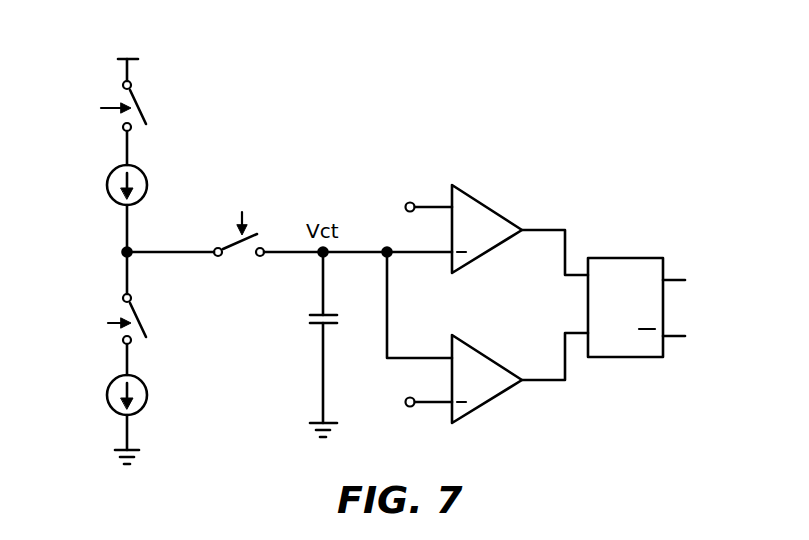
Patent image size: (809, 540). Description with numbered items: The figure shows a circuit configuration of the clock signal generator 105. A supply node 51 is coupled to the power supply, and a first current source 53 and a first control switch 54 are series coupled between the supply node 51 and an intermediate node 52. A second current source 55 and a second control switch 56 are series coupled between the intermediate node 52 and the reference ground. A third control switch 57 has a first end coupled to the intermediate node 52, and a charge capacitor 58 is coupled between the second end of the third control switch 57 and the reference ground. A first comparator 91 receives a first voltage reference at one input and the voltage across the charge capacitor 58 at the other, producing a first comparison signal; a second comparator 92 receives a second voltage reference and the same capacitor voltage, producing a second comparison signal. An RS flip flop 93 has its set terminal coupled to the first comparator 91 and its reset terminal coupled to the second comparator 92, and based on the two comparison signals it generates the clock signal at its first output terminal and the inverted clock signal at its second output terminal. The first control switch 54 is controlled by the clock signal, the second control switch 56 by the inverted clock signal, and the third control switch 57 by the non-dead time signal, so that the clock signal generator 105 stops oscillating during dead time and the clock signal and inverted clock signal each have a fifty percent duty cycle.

The clock signal generator 105 is at (688, 72).
The supply node 51 is at (111, 57).
The intermediate node 52 is at (115, 255).
The first current source 53 is at (152, 192).
The first control switch 54 is at (148, 111).
The second current source 55 is at (150, 395).
The second control switch 56 is at (146, 320).
The third control switch 57 is at (238, 262).
The charge capacitor 58 is at (312, 338).
The first comparator 91 is at (475, 230).
The second comparator 92 is at (478, 382).
The RS flip flop 93 is at (618, 257).